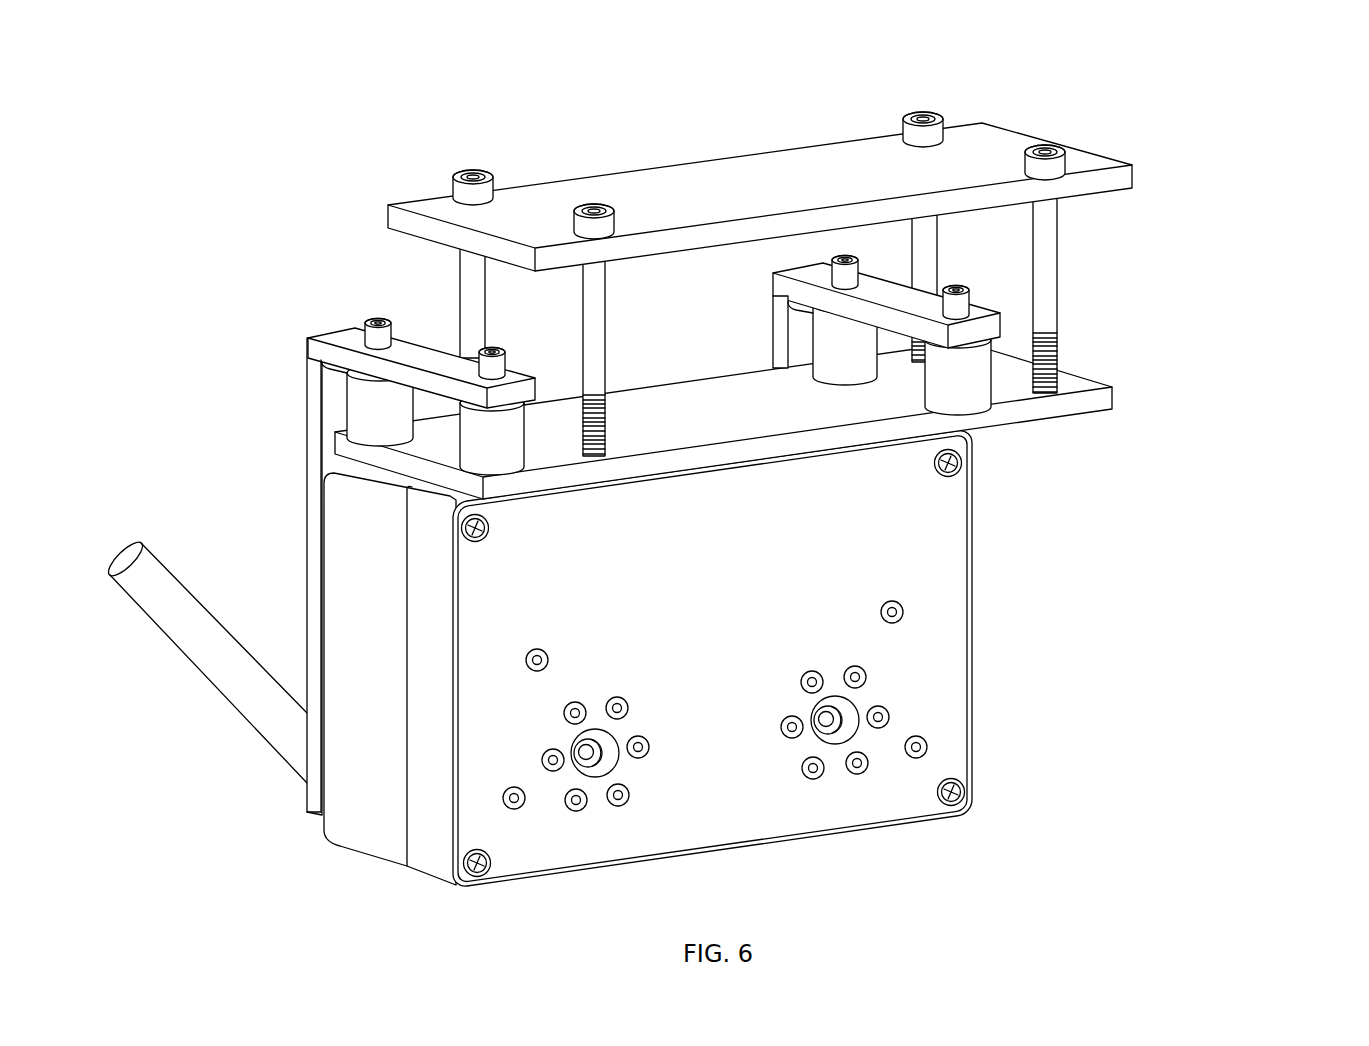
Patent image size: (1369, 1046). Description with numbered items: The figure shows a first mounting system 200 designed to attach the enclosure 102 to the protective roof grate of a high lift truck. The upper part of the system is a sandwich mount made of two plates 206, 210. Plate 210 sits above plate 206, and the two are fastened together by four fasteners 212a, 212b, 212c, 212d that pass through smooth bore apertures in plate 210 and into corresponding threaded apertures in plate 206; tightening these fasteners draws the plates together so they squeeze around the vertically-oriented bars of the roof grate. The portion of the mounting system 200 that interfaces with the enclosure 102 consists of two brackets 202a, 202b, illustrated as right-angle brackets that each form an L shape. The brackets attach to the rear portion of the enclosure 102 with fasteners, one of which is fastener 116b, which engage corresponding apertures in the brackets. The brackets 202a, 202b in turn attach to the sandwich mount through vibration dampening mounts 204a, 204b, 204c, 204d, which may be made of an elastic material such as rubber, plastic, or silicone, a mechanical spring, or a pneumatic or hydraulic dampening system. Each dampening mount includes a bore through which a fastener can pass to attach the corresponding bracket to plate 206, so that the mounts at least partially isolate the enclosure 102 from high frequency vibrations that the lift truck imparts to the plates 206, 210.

The first mounting system 200 is at (1266, 80).
The enclosure 102 is at (972, 630).
The fastener 116b is at (306, 528).
The bracket 202a is at (312, 340).
The bracket 202b is at (771, 308).
The vibration dampening mount 204a is at (346, 393).
The vibration dampening mount 204b is at (356, 433).
The vibration dampening mount 204c is at (827, 360).
The vibration dampening mount 204d is at (968, 388).
The plate 206 is at (656, 387).
The plate 210 is at (652, 166).
The fastener 212a is at (453, 180).
The fastener 212b is at (580, 206).
The fastener 212c is at (908, 113).
The fastener 212d is at (1033, 146).